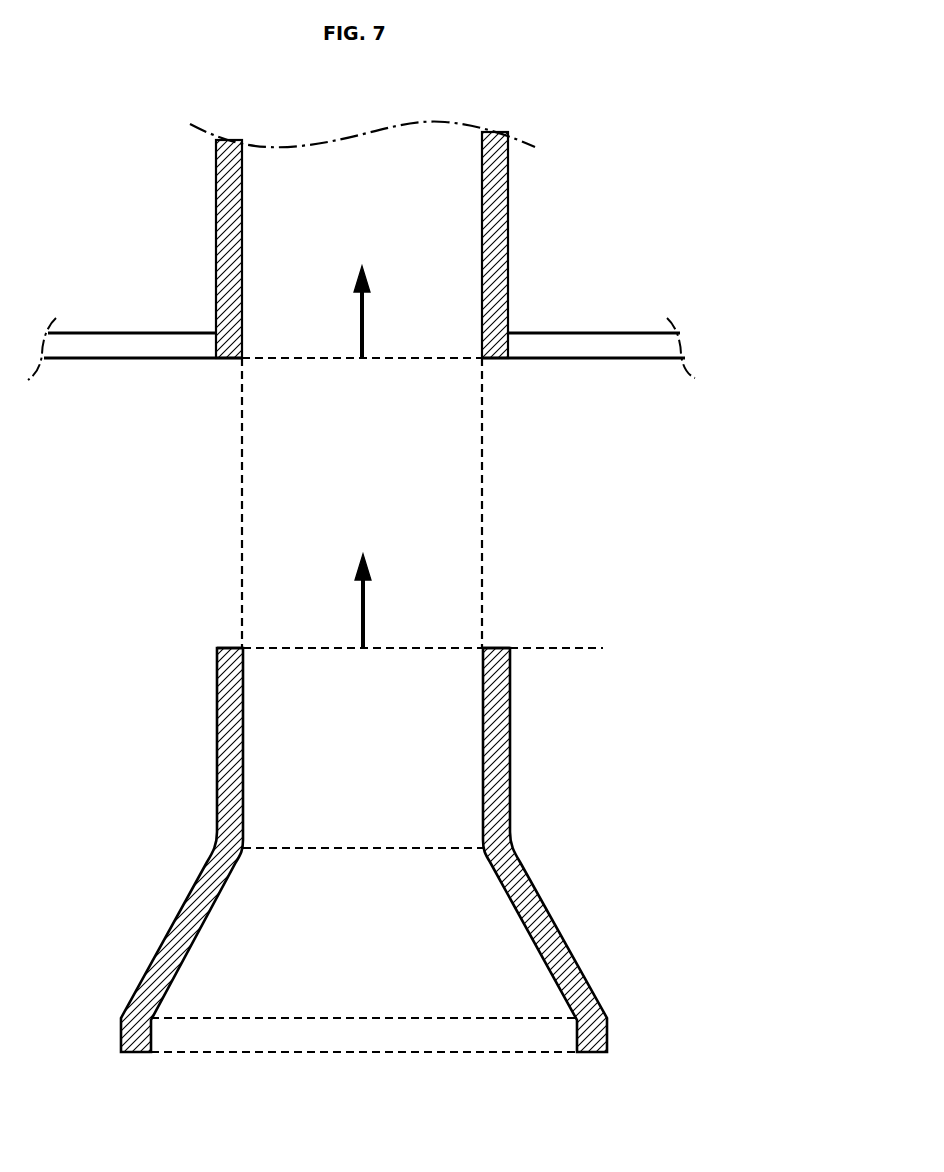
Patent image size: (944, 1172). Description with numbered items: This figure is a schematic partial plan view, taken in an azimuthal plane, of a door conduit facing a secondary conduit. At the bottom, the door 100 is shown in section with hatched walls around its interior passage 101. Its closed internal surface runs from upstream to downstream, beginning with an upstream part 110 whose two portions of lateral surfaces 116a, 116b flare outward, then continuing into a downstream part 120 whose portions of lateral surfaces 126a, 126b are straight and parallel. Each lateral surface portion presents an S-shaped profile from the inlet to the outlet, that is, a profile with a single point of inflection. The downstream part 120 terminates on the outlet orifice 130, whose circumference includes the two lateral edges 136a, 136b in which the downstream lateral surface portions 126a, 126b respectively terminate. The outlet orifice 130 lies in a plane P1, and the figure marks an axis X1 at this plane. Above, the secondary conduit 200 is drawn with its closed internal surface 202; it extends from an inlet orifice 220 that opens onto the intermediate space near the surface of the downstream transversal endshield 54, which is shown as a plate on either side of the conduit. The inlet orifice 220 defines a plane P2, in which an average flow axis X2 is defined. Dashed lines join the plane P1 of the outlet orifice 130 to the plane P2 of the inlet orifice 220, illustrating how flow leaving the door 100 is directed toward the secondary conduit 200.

The downstream transversal endshield 54 is at (136, 347).
The door 100 is at (197, 913).
The interior passage 101 is at (363, 850).
The upstream part 110 is at (470, 910).
The portion of lateral surface 116a is at (540, 950).
The portion of lateral surface 116b is at (190, 950).
The downstream part 120 is at (447, 792).
The portion of lateral surface 126a is at (484, 752).
The portion of lateral surface 126b is at (246, 750).
The outlet orifice 130 is at (308, 646).
The lateral edge 136a is at (484, 648).
The lateral edge 136b is at (242, 648).
The secondary conduit 200 is at (218, 206).
The closed internal surface 202 is at (483, 242).
The inlet orifice 220 is at (383, 360).
The plane of the outlet orifice P1 is at (585, 646).
The plane of the inlet orifice P2 is at (297, 360).
The first axial direction X1 is at (376, 601).
The average flow axis X2 is at (375, 312).